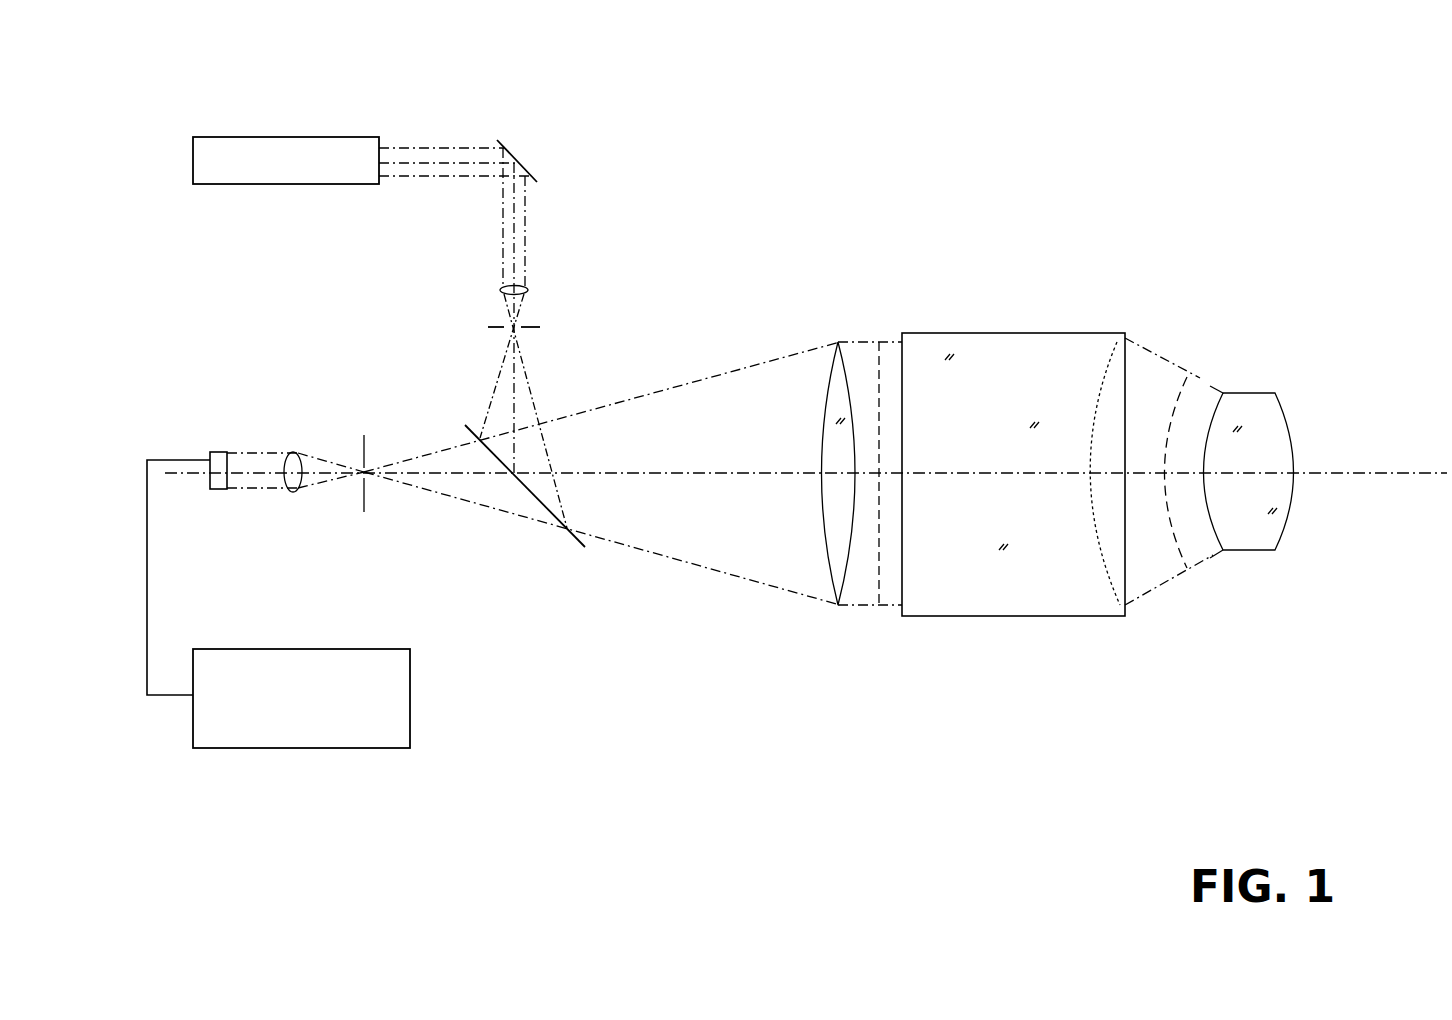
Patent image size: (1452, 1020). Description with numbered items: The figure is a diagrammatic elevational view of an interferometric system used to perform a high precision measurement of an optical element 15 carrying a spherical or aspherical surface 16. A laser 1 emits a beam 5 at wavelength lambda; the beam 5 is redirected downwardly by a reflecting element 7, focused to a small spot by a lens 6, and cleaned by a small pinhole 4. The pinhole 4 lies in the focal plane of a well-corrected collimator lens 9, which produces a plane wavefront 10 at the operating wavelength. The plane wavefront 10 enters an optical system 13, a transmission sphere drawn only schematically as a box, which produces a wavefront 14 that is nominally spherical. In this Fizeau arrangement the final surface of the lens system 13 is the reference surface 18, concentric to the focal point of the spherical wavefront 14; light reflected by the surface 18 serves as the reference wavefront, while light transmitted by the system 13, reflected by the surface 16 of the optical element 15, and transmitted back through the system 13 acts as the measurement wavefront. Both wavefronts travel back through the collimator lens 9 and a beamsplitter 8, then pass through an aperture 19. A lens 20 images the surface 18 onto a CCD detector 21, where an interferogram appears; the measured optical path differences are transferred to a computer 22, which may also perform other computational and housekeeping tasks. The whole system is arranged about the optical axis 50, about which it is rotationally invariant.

The laser 1 is at (342, 160).
The beam 5 is at (438, 148).
The reflecting element 7 is at (525, 170).
The lens 6 is at (527, 290).
The pinhole 4 is at (490, 328).
The beamsplitter 8 is at (548, 510).
The collimator lens 9 is at (839, 345).
The plane wavefront 10 is at (880, 360).
The optical system (transmission sphere) 13 is at (995, 373).
The reference surface 18 is at (1097, 552).
The wavefront 14 is at (1180, 545).
The surface 16 is at (1215, 410).
The optical element 15 is at (1243, 523).
The optical axis 50 is at (1366, 472).
The aperture 19 is at (362, 490).
The lens 20 is at (287, 489).
The CCD detector 21 is at (215, 490).
The computer 22 is at (301, 698).